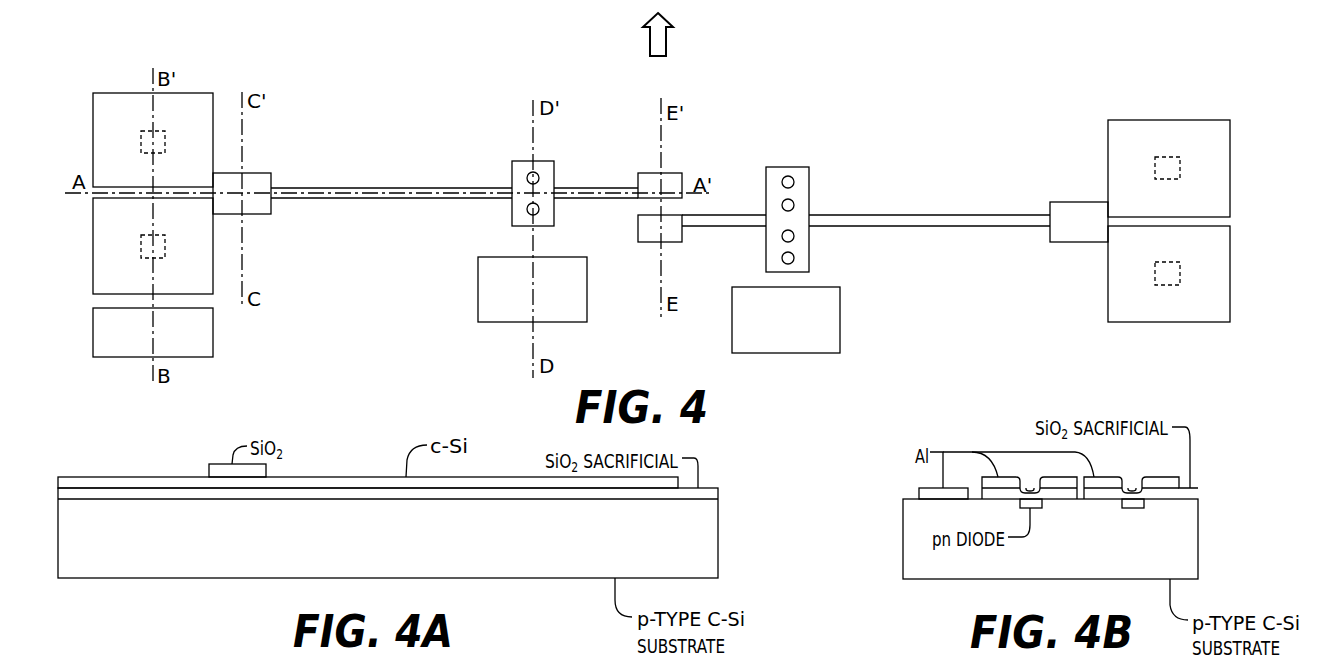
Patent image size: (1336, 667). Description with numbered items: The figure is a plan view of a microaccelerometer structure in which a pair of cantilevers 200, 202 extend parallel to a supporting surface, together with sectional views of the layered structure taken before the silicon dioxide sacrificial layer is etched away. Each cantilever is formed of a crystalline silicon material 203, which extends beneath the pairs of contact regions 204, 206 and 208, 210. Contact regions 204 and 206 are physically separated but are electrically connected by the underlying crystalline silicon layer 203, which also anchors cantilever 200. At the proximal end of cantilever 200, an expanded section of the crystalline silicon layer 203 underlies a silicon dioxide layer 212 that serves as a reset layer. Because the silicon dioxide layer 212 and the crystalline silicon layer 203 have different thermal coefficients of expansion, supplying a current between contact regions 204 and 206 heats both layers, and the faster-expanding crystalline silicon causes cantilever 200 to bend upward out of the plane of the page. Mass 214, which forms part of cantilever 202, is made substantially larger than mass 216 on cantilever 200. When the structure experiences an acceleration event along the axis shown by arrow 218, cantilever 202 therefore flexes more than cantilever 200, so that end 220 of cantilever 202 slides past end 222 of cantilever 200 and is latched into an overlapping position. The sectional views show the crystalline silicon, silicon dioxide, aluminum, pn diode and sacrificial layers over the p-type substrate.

In FIG. 4, the cantilever 200 is at (370, 176).
In FIG. 4, the cantilever 202 is at (908, 202).
In FIG. 4, the crystalline silicon material 203 is at (330, 198).
In FIG. 4A, the crystalline silicon material 203 is at (127, 477).
In FIG. 4, the contact region 204 is at (178, 93).
In FIG. 4, the contact region 206 is at (107, 265).
In FIG. 4, the contact region 208 is at (1167, 120).
In FIG. 4, the contact region 210 is at (1108, 297).
In FIG. 4, the silicon dioxide layer 212 is at (257, 183).
In FIG. 4, the mass 214 is at (788, 167).
In FIG. 4, the mass 216 is at (523, 160).
In FIG. 4, the arrow 218 is at (666, 42).
In FIG. 4, the end of cantilever 202 220 is at (638, 227).
In FIG. 4, the end of cantilever 200 222 is at (645, 173).